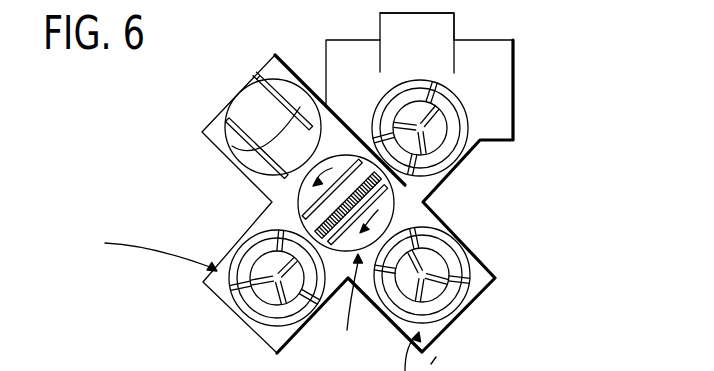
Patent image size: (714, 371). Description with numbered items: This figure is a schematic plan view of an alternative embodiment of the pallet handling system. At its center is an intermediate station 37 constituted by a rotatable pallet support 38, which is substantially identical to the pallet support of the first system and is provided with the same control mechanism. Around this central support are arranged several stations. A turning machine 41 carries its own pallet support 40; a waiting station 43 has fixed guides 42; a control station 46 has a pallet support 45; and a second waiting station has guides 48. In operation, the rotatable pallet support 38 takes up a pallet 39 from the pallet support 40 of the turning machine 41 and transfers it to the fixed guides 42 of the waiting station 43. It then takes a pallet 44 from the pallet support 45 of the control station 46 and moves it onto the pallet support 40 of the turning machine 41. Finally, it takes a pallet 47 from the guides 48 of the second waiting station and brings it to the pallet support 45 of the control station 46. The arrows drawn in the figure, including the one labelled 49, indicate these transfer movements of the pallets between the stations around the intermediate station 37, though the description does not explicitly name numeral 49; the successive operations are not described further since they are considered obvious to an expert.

The intermediate station 37 is at (357, 306).
The rotatable pallet support 38 is at (306, 201).
The pallet 39 is at (445, 98).
The pallet support 40 is at (458, 107).
The turning machine 41 is at (456, 22).
The fixed guides 42 is at (262, 147).
The waiting station 43 is at (259, 109).
The pallet 44 is at (425, 262).
The pallet support 45 is at (462, 272).
The control station 46 is at (435, 351).
The pallet 47 is at (288, 290).
The guides 48 is at (262, 313).
The direction arrow 49 is at (146, 249).